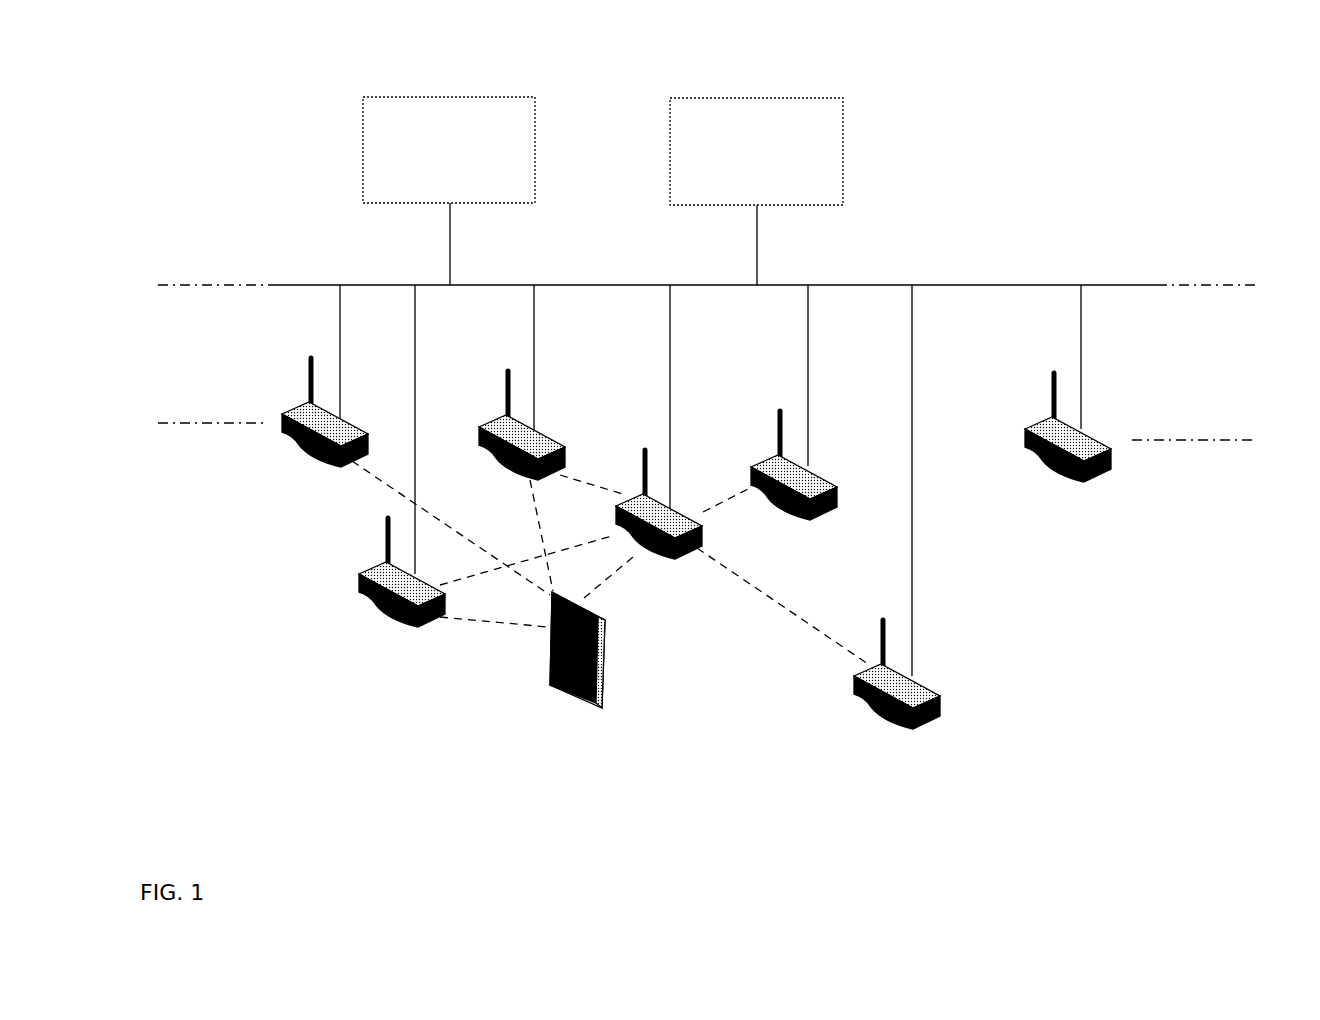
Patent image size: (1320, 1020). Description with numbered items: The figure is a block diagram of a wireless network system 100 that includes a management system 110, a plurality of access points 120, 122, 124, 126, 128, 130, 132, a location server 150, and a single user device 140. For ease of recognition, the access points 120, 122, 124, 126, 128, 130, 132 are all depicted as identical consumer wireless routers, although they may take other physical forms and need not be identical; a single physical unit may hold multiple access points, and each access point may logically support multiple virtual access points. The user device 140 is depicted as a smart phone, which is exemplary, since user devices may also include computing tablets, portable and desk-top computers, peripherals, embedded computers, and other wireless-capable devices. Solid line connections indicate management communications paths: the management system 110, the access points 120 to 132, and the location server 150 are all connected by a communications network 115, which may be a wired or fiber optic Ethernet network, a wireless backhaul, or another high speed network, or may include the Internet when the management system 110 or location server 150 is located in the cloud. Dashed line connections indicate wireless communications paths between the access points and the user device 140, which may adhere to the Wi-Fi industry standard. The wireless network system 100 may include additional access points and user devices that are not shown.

The wireless network system 100 is at (201, 72).
The management system 110 is at (449, 150).
The communications network 115 is at (1000, 285).
The access point 120 is at (663, 558).
The access point 122 is at (385, 620).
The access point 124 is at (553, 432).
The access point 126 is at (771, 460).
The access point 128 is at (860, 672).
The access point 130 is at (310, 458).
The access point 132 is at (1082, 482).
The user device 140 is at (608, 705).
The location server 150 is at (756, 151).